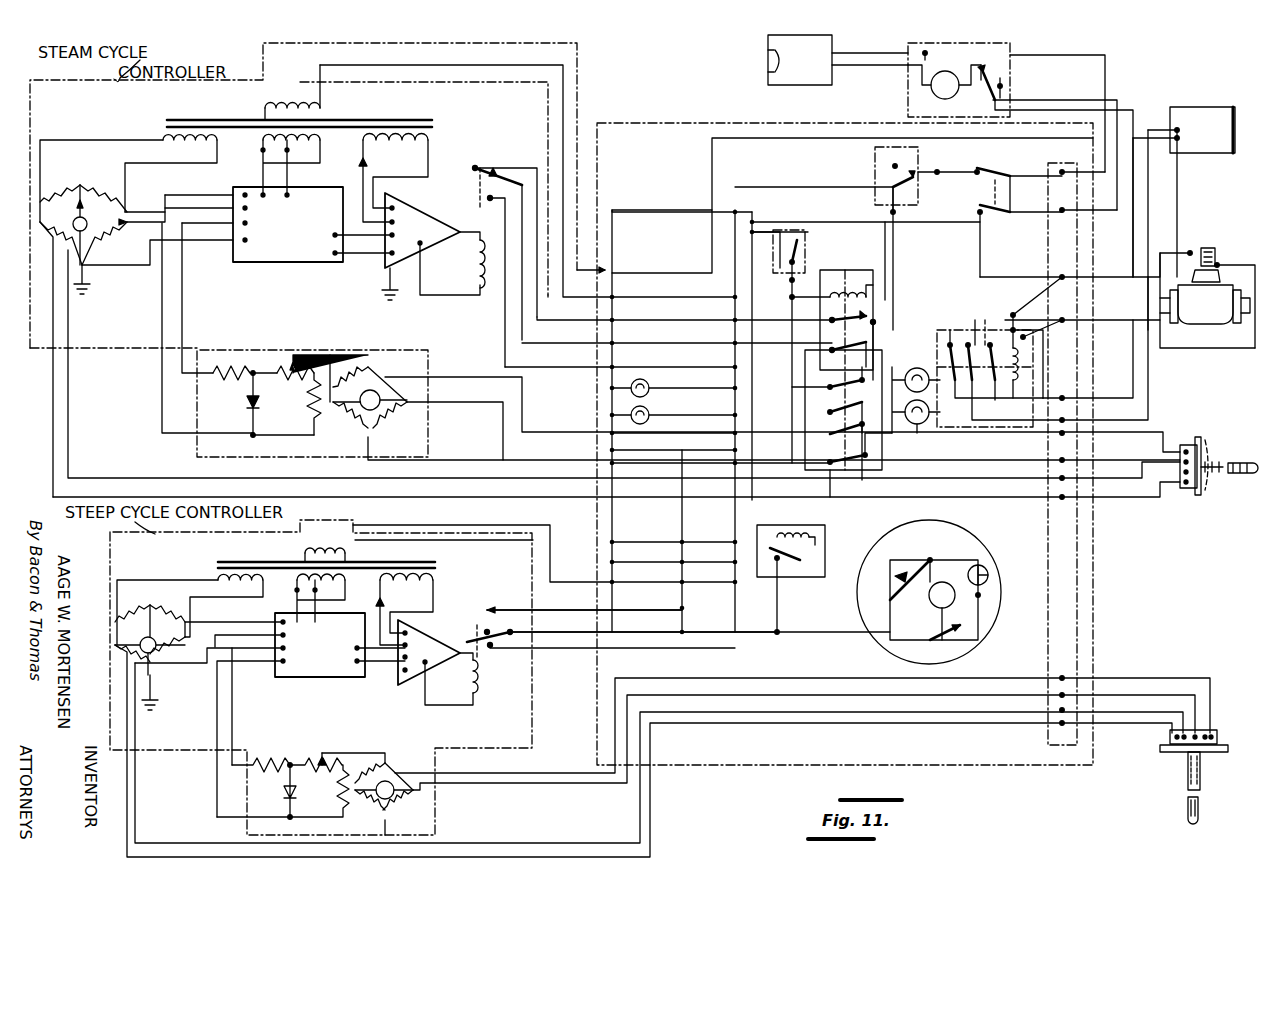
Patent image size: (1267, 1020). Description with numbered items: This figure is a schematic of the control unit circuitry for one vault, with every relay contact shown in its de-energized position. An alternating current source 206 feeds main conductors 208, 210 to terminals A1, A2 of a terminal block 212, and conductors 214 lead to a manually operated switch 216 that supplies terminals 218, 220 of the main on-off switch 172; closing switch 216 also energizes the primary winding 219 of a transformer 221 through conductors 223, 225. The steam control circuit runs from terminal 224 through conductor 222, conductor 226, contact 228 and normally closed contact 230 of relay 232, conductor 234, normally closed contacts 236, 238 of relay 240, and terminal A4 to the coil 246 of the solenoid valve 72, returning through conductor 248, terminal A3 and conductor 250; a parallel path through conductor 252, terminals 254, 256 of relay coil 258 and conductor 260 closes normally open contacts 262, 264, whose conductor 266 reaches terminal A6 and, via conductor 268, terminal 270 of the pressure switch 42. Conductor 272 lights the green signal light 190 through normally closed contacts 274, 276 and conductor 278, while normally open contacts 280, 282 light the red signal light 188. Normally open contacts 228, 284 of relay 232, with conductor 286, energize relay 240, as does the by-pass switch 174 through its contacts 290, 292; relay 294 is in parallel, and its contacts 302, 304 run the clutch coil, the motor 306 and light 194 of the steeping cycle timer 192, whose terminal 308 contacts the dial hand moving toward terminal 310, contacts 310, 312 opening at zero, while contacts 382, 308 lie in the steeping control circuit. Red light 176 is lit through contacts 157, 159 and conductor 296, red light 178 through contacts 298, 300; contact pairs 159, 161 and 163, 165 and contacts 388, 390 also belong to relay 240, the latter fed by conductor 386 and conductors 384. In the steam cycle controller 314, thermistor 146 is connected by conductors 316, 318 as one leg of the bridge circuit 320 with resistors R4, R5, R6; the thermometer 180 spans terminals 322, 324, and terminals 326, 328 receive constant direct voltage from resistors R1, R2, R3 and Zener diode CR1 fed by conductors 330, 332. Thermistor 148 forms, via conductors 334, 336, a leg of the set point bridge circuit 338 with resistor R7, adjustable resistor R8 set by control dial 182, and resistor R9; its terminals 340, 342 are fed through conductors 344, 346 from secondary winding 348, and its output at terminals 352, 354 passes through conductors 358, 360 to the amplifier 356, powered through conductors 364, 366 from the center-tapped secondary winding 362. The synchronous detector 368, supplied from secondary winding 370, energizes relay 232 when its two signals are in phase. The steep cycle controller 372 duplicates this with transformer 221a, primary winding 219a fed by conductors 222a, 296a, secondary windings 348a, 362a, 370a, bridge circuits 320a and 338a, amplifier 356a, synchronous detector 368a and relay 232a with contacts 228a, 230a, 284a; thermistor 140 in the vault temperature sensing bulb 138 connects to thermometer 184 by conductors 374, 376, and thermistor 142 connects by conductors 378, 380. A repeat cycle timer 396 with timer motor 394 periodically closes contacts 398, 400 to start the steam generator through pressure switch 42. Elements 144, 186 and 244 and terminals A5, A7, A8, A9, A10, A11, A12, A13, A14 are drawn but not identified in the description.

The pressure switch 42 is at (1182, 150).
The solenoid valve 72 is at (1202, 325).
The vault temperature sensing bulb 138 is at (1182, 803).
The thermistor 140 is at (1195, 752).
The thermistor 142 is at (1183, 777).
The plug 144 is at (1232, 458).
The condensate temperature sensing thermistor 146 is at (1208, 443).
The condensate temperature sensing thermistor 148 is at (1206, 487).
The normally closed contact 157 is at (827, 372).
The normally closed contact 159 is at (836, 469).
The contact 161 is at (870, 445).
The contact 163 is at (830, 478).
The contact 165 is at (872, 460).
The main on-off switch 172 is at (873, 150).
The steam cycle by-pass switch 174 is at (812, 244).
The red light 176 is at (651, 380).
The red light 178 is at (652, 408).
The condensate temperature indicating thermometer 180 is at (378, 383).
The control dial 182 is at (89, 225).
The thermometer 184 is at (388, 775).
The ground 186 is at (152, 678).
The red signal light 188 is at (912, 414).
The green signal light 190 is at (922, 433).
The steeping cycle timer 192 is at (938, 524).
The light 194 is at (992, 568).
The alternating current source 206 is at (768, 86).
The main conductor 208 is at (866, 54).
The main conductor 210 is at (850, 72).
The terminal block 212 is at (1086, 590).
The conductors 214 is at (1038, 176).
The manually operated switch 216 is at (986, 165).
The terminal 218 is at (947, 169).
The primary winding 219 is at (299, 102).
The primary winding 219a is at (380, 536).
The terminal 220 is at (897, 218).
The transformer 221 is at (346, 116).
The transformer 221a is at (350, 542).
The conductor 222 is at (752, 187).
The conductor 222a is at (303, 542).
The conductor 223 is at (343, 46).
The terminal 224 is at (910, 176).
The conductor 225 is at (400, 68).
The conductor 226 is at (676, 342).
The contact 228 is at (473, 163).
The contact 228a is at (486, 625).
The normally closed contact 230 is at (500, 167).
The contact 230a is at (494, 607).
The relay 232 is at (472, 183).
The relay 232a is at (477, 616).
The conductor 234 is at (532, 306).
The normally closed contact 236 is at (830, 320).
The normally closed contact 238 is at (880, 312).
The relay 240 is at (855, 262).
The lead 244 is at (1122, 321).
The coil 246 is at (1208, 253).
The conductor 248 is at (1126, 266).
The conductor 250 is at (983, 226).
The conductor 252 is at (1046, 276).
The terminal 254 is at (1013, 301).
The terminal 256 is at (1046, 333).
The relay coil 258 is at (1017, 390).
The conductor 260 is at (1046, 320).
The normally open contact 262 is at (996, 318).
The normally open contact 264 is at (985, 391).
The conductor 266 is at (1046, 352).
The conductor 268 is at (1144, 361).
The terminal 270 is at (1175, 113).
The conductor 272 is at (807, 222).
The normally closed contact 274 is at (975, 311).
The normally closed contact 276 is at (990, 378).
The conductor 278 is at (894, 250).
The normally open contact 280 is at (948, 342).
The normally open contact 282 is at (948, 362).
The normally open contact 284 is at (478, 194).
The normally open contact 284a is at (487, 646).
The conductor 286 is at (506, 328).
The contact 290 is at (771, 263).
The contact 292 is at (796, 246).
The relay 294 is at (828, 535).
The conductor 296 is at (664, 212).
The conductor 296a is at (400, 530).
The normally open contact 298 is at (848, 392).
The normally open contact 300 is at (868, 434).
The normally open contact 302 is at (779, 562).
The normally open contact 304 is at (799, 570).
The motor 306 is at (925, 620).
The terminal 308 is at (888, 584).
The terminal 310 is at (898, 655).
The contact 312 is at (958, 648).
The steam cycle controller 314 is at (92, 360).
The conductor 316 is at (556, 431).
The conductor 318 is at (533, 462).
The temperature indicating bridge circuit 320 is at (383, 435).
The temperature indicating bridge circuit 320a is at (413, 808).
The terminal 322 is at (322, 446).
The terminal 324 is at (407, 402).
The terminal 326 is at (370, 366).
The terminal 328 is at (370, 438).
The conductor 330 is at (182, 318).
The conductor 332 is at (162, 418).
The conductor 334 is at (68, 422).
The conductor 336 is at (120, 496).
The condensate temperature set point bridge circuit 338 is at (60, 185).
The atmospheric temperature set point bridge circuit 338a is at (130, 612).
The terminal 340 is at (49, 359).
The terminal 342 is at (145, 208).
The conductor 344 is at (62, 143).
The conductor 346 is at (140, 159).
The secondary winding 348 is at (164, 137).
The secondary winding 348a is at (219, 579).
The terminal 352 is at (88, 280).
The terminal 354 is at (140, 216).
The amplifier 356 is at (293, 263).
The amplifier 356a is at (295, 715).
The conductor 358 is at (204, 213).
The conductor 360 is at (157, 243).
The center-tapped secondary winding 362 is at (297, 145).
The center-tapped secondary winding 362a is at (290, 587).
The conductor 364 is at (242, 180).
The conductor 366 is at (301, 166).
The synchronous detector 368 is at (367, 266).
The synchronous detector 368a is at (406, 688).
The secondary winding 370 is at (393, 177).
The secondary winding 370a is at (427, 578).
The steep cycle controller and indication circuit board 372 is at (109, 553).
The conductor 374 is at (696, 681).
The conductor 376 is at (786, 685).
The conductor 378 is at (688, 722).
The conductor 380 is at (880, 722).
The contact 382 is at (930, 560).
The conductors 384 is at (645, 624).
The conductor 386 is at (665, 601).
The contact 388 is at (830, 348).
The contact 390 is at (878, 322).
The timer motor 394 is at (908, 95).
The repeat cycle timer 396 is at (1014, 48).
The contact 398 is at (983, 68).
The contact 400 is at (1006, 80).
The terminal A1 is at (1076, 454).
The terminal A2 is at (1083, 222).
The terminal A3 is at (1061, 266).
The terminal A4 is at (1082, 320).
The terminal A5 is at (1088, 360).
The terminal A6 is at (1090, 349).
The terminal A7 is at (1061, 444).
The terminal A8 is at (1061, 470).
The terminal A9 is at (1061, 488).
The terminal A10 is at (1064, 509).
The terminal A11 is at (1066, 669).
The terminal A12 is at (1066, 687).
The terminal A13 is at (1066, 703).
The terminal A14 is at (1066, 729).
The resistor R1 is at (245, 361).
The resistor R2 is at (320, 376).
The resistor R3 is at (297, 404).
The resistor R4 is at (396, 419).
The resistor R5 is at (344, 425).
The resistor R6 is at (348, 372).
The resistor R7 is at (61, 239).
The adjustable resistor R8 is at (103, 184).
The resistor R9 is at (109, 243).
The Zener diode CR1 is at (260, 404).